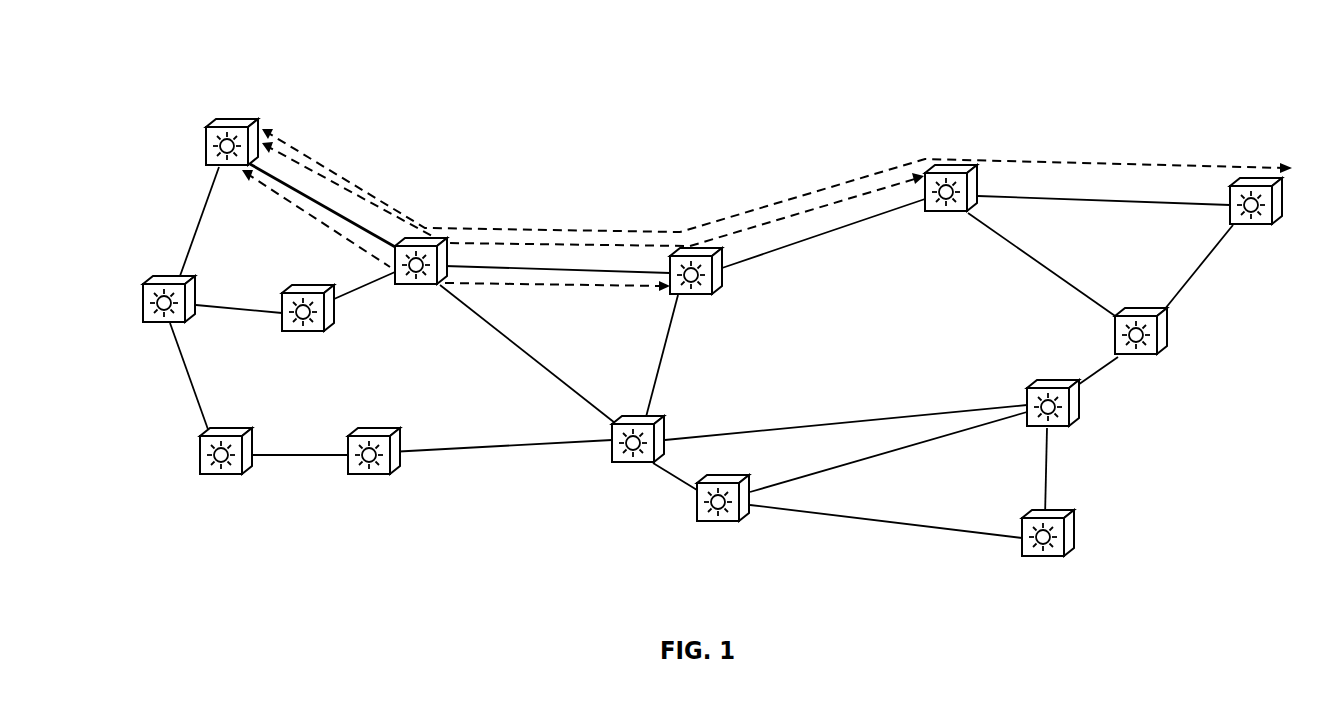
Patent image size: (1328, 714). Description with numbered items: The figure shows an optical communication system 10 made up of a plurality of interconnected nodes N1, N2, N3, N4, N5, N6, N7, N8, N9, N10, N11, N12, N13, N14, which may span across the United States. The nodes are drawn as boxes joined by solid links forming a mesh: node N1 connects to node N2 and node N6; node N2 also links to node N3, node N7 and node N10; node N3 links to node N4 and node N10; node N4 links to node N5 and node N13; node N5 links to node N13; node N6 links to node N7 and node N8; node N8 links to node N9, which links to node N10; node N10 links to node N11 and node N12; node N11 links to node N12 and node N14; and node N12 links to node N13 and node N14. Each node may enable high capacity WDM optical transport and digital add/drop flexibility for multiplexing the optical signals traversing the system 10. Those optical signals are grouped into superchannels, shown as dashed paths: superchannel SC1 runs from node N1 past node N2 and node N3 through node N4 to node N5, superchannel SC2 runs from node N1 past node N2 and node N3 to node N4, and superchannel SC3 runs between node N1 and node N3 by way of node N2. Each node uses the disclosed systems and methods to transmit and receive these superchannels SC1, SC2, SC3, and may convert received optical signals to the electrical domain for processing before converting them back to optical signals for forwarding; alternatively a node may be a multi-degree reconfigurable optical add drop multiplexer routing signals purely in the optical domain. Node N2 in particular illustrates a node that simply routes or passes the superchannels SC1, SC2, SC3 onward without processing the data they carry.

The optical communication system 10 is at (337, 58).
The node N1 is at (214, 142).
The node N2 is at (421, 279).
The node N3 is at (696, 287).
The node N4 is at (951, 206).
The node N5 is at (1263, 219).
The node N6 is at (151, 299).
The node N7 is at (308, 327).
The node N8 is at (226, 472).
The node N9 is at (374, 469).
The node N10 is at (638, 460).
The node N11 is at (723, 521).
The node N12 is at (1072, 421).
The node N13 is at (1156, 350).
The node N14 is at (1070, 552).
The superchannel SC1 is at (1112, 160).
The superchannel SC2 is at (808, 207).
The superchannel SC3 is at (600, 287).